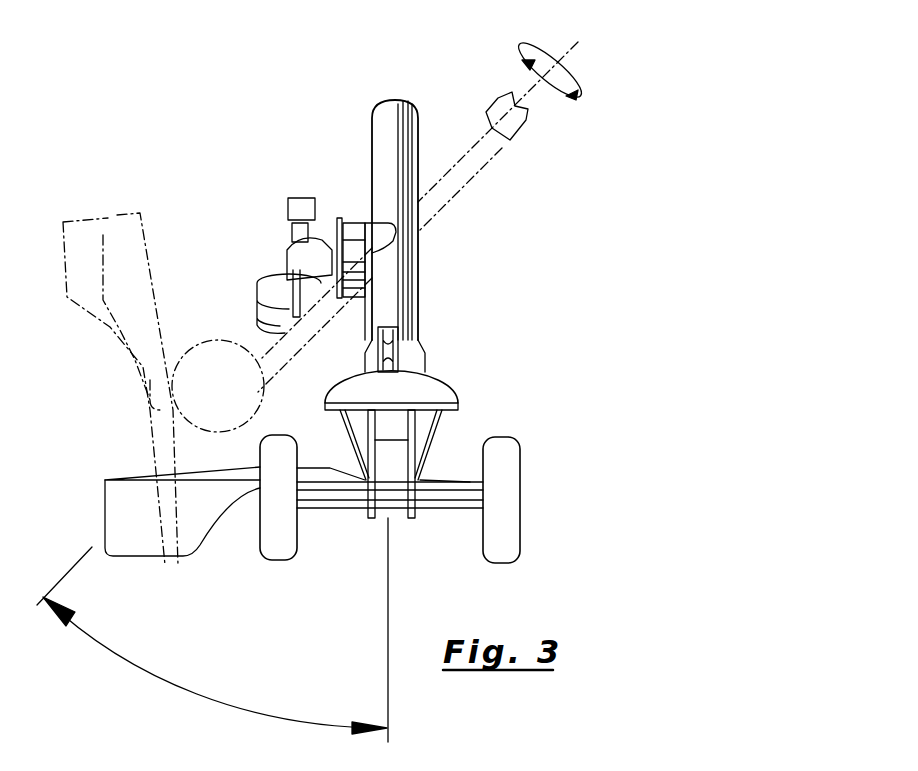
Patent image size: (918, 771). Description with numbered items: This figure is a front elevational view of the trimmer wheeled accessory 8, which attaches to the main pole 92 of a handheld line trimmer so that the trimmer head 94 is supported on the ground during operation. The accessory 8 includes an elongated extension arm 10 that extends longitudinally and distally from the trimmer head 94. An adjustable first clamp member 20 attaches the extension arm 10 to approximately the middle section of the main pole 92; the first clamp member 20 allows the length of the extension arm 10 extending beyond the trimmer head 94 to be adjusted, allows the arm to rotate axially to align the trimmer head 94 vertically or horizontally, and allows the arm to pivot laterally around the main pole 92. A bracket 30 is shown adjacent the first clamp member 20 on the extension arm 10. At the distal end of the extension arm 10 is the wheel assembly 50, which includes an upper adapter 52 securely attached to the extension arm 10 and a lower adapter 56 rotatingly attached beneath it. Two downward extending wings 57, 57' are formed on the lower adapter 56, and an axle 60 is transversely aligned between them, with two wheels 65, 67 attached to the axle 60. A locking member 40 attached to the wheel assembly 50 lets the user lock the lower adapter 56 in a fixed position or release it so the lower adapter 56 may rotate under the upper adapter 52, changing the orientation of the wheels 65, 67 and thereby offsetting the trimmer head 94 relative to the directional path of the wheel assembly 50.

The trimmer wheeled accessory 8 is at (478, 222).
The extension arm 10 is at (386, 133).
The first clamp member 20 is at (290, 250).
The carriage bracket 30 is at (382, 242).
The locking member 40 is at (405, 340).
The wheel assembly 50 is at (455, 369).
The upper adapter 52 is at (440, 390).
The lower adapter 56 is at (440, 428).
The downward extending wing 57 is at (358, 464).
The downward extending wing 57' is at (440, 464).
The axle 60 is at (340, 500).
The wheel 65 is at (265, 548).
The wheel 67 is at (505, 495).
The main pole 92 is at (492, 138).
The trimmer head 94 is at (110, 225).